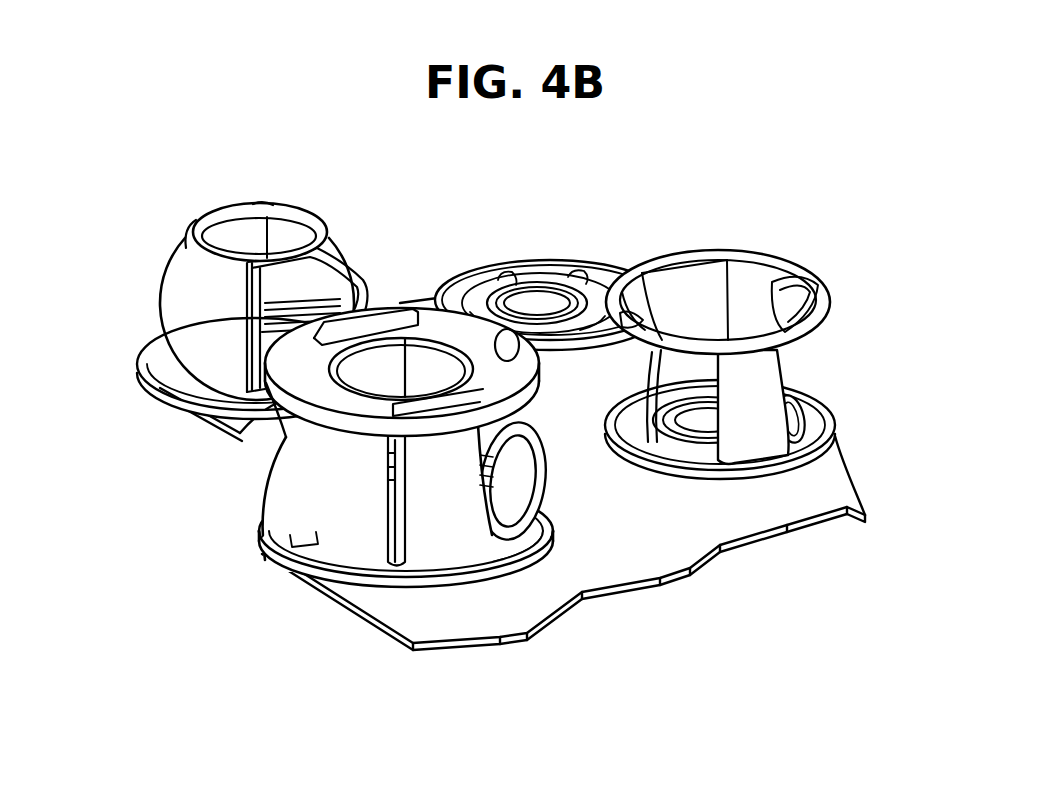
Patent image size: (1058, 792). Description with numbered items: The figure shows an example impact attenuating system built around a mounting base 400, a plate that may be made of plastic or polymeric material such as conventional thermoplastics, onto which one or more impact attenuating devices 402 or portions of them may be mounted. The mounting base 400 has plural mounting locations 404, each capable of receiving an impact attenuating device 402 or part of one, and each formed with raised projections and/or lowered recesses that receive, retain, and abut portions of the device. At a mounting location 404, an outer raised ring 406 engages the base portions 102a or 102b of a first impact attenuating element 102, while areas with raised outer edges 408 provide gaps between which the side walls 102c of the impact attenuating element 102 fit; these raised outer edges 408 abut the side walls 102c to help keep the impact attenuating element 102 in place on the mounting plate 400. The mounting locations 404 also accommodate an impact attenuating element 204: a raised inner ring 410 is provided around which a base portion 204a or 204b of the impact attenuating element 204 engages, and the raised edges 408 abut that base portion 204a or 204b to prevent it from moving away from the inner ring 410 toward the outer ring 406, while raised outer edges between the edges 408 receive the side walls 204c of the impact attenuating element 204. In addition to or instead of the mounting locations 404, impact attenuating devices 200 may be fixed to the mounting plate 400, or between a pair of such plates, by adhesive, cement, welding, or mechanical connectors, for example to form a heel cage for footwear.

The first impact attenuating element 102 is at (768, 245).
The base portion 102a is at (240, 433).
The base portion 102b is at (688, 442).
The side walls 102c is at (800, 388).
The impact attenuating device 200 is at (412, 597).
The impact attenuating element 204 is at (198, 334).
The base portion 204a is at (250, 212).
The base portion 204b is at (300, 296).
The side walls 204c is at (198, 299).
The mounting base 400 is at (827, 483).
The impact attenuating device 402 is at (283, 537).
The mounting locations 404 is at (140, 376).
The outer raised ring 406 is at (550, 513).
The raised outer edges 408 is at (583, 318).
The raised inner ring 410 is at (517, 287).